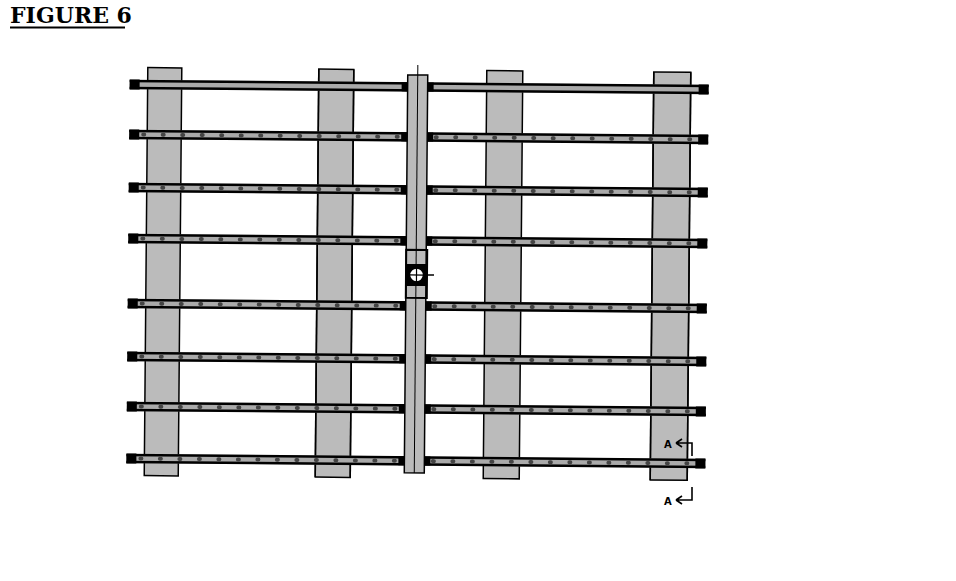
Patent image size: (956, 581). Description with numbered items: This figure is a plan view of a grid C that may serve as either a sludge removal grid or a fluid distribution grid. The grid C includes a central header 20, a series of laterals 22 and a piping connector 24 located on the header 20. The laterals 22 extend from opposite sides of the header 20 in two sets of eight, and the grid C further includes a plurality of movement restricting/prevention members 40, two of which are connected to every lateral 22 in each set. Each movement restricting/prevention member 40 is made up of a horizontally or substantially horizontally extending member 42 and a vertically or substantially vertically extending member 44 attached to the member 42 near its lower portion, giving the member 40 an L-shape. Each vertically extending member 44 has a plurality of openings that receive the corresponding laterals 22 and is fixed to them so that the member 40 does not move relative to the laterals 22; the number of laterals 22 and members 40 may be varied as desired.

The header 20 is at (412, 473).
The laterals 22 is at (247, 467).
The piping connector 24 is at (406, 274).
The movement restricting/prevention members 40 is at (704, 277).
The horizontally extending member 42 is at (305, 388).
The vertically extending member 44 is at (353, 389).
The grid C is at (771, 133).